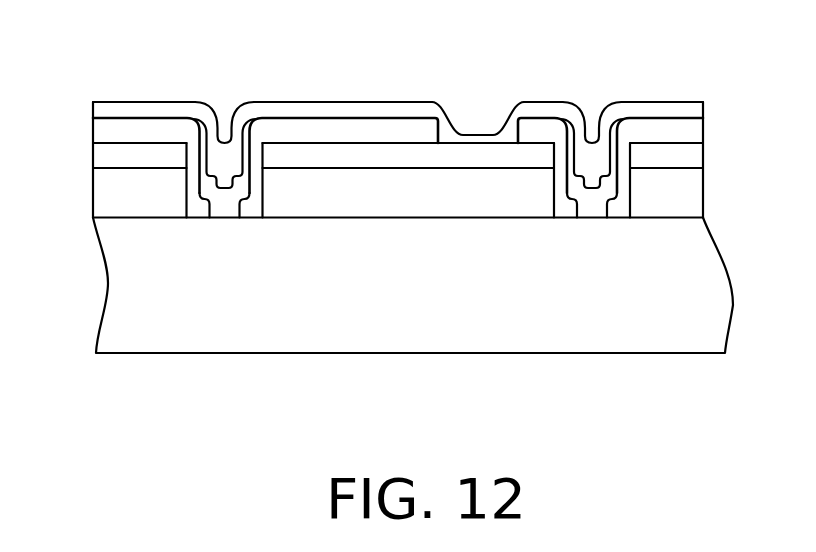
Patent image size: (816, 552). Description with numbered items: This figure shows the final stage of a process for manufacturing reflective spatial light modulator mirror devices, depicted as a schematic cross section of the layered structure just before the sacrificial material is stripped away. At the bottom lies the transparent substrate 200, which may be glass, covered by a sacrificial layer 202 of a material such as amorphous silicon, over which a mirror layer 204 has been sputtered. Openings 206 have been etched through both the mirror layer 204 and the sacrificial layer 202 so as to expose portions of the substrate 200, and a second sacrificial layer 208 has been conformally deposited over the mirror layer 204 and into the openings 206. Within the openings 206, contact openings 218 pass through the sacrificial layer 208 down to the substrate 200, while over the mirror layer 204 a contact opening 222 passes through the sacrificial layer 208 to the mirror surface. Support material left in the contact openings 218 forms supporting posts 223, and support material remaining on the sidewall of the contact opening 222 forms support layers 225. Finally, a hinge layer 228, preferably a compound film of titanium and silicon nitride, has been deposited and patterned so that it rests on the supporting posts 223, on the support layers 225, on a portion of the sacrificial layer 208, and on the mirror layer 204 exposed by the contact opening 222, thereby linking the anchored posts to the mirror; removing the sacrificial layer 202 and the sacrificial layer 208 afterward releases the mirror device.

The substrate 200 is at (713, 302).
The sacrificial layer 202 is at (113, 192).
The mirror layer 204 is at (113, 152).
The openings 206 is at (197, 200).
The sacrificial layer 208 is at (283, 128).
The contact openings 218 is at (230, 105).
The contact opening 222 is at (492, 93).
The supporting posts 223 is at (209, 128).
The support layers 225 is at (457, 142).
The hinge layer 228 is at (687, 110).